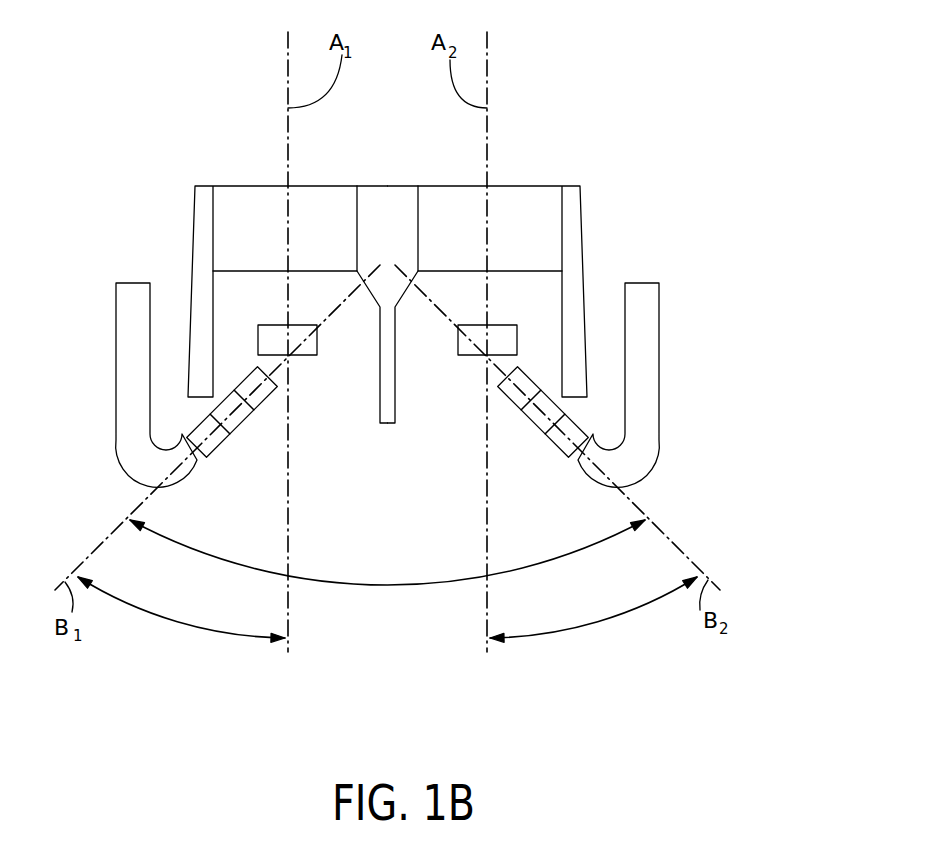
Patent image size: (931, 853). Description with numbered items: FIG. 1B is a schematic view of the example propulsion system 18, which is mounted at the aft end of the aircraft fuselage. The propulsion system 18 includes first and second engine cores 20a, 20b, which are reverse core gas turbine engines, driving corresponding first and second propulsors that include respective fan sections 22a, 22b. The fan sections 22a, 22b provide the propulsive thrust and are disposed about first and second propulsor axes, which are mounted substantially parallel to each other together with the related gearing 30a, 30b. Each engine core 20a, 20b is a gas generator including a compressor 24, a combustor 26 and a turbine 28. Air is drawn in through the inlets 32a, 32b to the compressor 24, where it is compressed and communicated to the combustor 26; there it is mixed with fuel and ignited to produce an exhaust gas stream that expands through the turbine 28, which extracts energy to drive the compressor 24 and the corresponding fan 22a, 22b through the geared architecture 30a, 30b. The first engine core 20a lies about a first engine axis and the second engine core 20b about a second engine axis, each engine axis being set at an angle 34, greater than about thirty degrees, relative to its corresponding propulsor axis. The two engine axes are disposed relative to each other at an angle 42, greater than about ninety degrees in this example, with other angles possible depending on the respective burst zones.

The propulsion system 18 is at (692, 125).
The first engine core 20a is at (322, 425).
The second engine core 20b is at (530, 488).
The first fan section 22a is at (254, 198).
The second fan section 22b is at (525, 195).
The compressor 24 is at (227, 435).
The combustor 26 is at (242, 413).
The turbine 28 is at (263, 388).
The first geared architecture 30a is at (319, 348).
The second geared architecture 30b is at (456, 348).
The first inlet 32a is at (131, 282).
The second inlet 32b is at (644, 282).
The angle 34 is at (180, 627).
The angle 42 is at (392, 588).